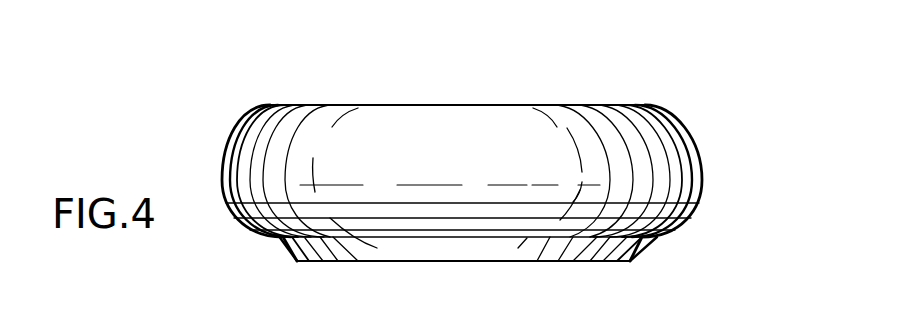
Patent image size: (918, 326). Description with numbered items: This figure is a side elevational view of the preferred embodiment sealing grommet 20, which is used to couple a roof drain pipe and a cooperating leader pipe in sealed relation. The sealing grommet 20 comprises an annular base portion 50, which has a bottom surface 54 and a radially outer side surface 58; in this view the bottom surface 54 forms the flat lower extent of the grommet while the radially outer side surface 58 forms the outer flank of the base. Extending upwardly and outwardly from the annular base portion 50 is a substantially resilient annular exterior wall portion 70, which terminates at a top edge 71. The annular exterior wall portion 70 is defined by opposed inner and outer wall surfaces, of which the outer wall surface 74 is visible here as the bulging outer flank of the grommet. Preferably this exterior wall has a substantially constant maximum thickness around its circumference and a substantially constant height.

The sealing grommet 20 is at (739, 91).
The top edge 71 is at (273, 104).
The annular exterior wall portion 70 is at (690, 157).
The outer wall surface 74 is at (680, 208).
The radially outer side surface 58 is at (643, 247).
The annular base portion 50 is at (589, 254).
The bottom surface 54 is at (380, 262).